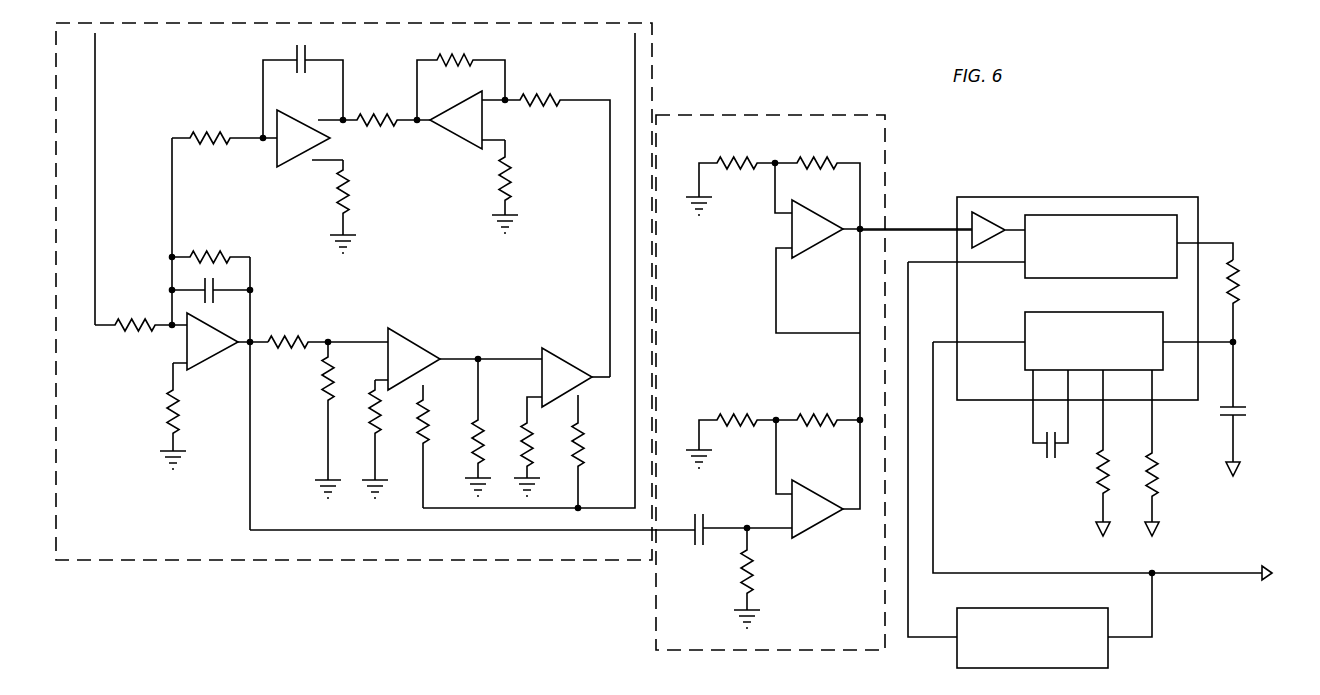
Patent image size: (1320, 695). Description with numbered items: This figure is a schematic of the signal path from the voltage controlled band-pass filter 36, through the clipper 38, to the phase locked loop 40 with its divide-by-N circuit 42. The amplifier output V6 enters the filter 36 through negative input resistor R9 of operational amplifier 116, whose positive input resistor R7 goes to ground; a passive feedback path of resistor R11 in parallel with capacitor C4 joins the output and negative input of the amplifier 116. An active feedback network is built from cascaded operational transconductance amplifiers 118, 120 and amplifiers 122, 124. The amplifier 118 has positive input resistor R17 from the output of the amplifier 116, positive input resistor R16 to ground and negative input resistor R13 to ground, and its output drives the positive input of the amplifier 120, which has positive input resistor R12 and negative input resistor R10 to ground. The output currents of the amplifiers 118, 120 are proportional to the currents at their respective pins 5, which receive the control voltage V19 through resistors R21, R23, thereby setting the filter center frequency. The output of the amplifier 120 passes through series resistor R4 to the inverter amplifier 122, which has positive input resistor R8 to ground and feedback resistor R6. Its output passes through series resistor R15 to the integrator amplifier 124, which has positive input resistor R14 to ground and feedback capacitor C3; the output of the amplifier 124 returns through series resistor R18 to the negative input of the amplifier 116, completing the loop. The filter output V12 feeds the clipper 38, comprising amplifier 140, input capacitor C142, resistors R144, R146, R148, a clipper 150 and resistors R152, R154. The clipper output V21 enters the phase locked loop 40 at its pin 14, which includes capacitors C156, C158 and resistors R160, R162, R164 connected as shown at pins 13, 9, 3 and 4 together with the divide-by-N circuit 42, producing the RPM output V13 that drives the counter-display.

The second band-pass filter 36 is at (418, 560).
The clipper 38 is at (721, 652).
The phase locked loop 40 is at (1001, 401).
The divide-by-N circuit 42 is at (990, 670).
The operational amplifier 116 is at (213, 368).
The operational transconductance amplifier 118 is at (414, 323).
The operational transconductance amplifier 120 is at (567, 361).
The amplifier (inverter) 122 is at (468, 134).
The amplifier (integrator) 124 is at (306, 150).
The amplifier 140 is at (815, 526).
The clipper 150 is at (806, 258).
The series resistor R4 is at (577, 80).
The feedback resistor R6 is at (469, 57).
The positive input resistor R7 is at (168, 412).
The positive input resistor R8 is at (510, 169).
The negative input resistor R9 is at (160, 302).
The negative input resistor R10 is at (530, 453).
The feedback resistor R11 is at (246, 238).
The positive input resistor R12 is at (486, 440).
The negative input resistor R13 is at (372, 428).
The positive input resistor R14 is at (352, 191).
The series resistor R15 is at (386, 109).
The positive input resistor R16 is at (322, 387).
The positive input resistor R17 is at (292, 326).
The series resistor R18 is at (240, 133).
The resistor R21 is at (427, 421).
The resistor R23 is at (590, 435).
The feedback capacitor C3 is at (315, 54).
The capacitor C4 is at (218, 284).
The resistor R144 is at (752, 573).
The resistor R146 is at (745, 418).
The resistor R148 is at (818, 405).
The resistor R152 is at (830, 153).
The resistor R154 is at (745, 155).
The resistor R160 is at (1237, 286).
The resistor R162 is at (1157, 488).
The resistor R164 is at (1098, 489).
The input capacitor C142 is at (695, 537).
The capacitor C156 is at (1042, 448).
The capacitor C158 is at (1243, 412).
The output of the amplifier V6 is at (110, 179).
The output of the filter V12 is at (248, 523).
The output signal V13 is at (1208, 595).
The output of the sample and hold circuit V19 is at (529, 270).
The output of the clipper V21 is at (905, 228).
The pin 3 is at (966, 439).
The pin 4 is at (1102, 451).
The pins 5 is at (490, 394).
The pin 9 is at (1198, 332).
The pin 13 is at (1205, 243).
The amplifier 14 is at (916, 221).